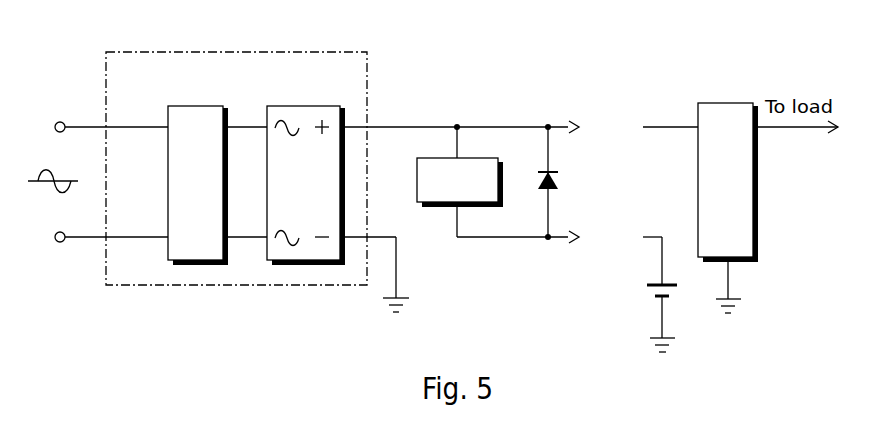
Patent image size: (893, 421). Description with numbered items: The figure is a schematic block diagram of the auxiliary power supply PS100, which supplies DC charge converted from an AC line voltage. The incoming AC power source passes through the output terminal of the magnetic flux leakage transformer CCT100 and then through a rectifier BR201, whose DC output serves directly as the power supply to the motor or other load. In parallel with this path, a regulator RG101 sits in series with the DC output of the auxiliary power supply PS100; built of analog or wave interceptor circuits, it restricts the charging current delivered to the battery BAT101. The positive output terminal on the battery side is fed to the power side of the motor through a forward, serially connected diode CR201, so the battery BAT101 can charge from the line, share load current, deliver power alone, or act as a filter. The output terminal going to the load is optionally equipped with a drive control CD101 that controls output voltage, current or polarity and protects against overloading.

The auxiliary power supply PS100 is at (302, 52).
The magnetic flux leakage transformer CCT100 is at (168, 117).
The rectifier BR201 is at (322, 106).
The regulator RG101 is at (460, 182).
The diode CR201 is at (585, 182).
The drive control CD101 is at (727, 103).
The battery BAT101 is at (622, 294).